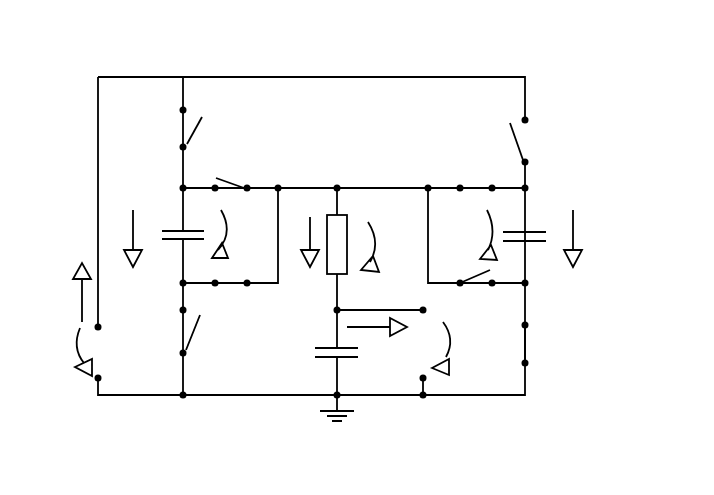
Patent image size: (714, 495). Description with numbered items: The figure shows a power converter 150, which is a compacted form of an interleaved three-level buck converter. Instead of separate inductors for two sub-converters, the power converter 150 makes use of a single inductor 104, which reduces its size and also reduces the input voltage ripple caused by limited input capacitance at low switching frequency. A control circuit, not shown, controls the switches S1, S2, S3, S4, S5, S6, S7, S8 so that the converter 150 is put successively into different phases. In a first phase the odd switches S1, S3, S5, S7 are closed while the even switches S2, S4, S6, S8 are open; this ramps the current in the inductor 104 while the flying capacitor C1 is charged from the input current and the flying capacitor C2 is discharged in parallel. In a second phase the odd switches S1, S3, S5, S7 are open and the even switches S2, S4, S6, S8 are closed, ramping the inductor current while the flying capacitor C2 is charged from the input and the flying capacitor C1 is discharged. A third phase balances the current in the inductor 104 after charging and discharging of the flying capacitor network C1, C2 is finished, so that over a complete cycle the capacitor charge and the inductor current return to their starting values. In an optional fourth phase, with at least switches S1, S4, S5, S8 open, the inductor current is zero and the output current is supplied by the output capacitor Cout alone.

The power converter 150 is at (188, 47).
The inductor 104 is at (348, 222).
The switch S1 is at (175, 129).
The switch S2 is at (231, 175).
The switch S3 is at (231, 297).
The switch S4 is at (173, 332).
The switch S5 is at (543, 344).
The switch S6 is at (476, 292).
The switch S7 is at (476, 175).
The switch S8 is at (538, 141).
The flying capacitor C1 is at (164, 213).
The flying capacitor C2 is at (543, 214).
The output capacitor Cout is at (321, 367).